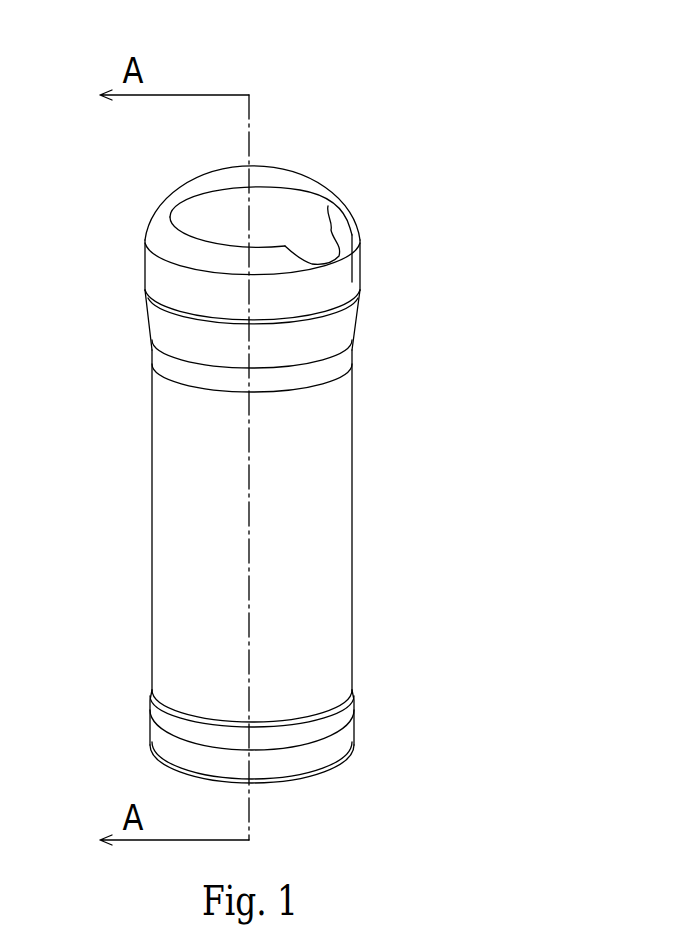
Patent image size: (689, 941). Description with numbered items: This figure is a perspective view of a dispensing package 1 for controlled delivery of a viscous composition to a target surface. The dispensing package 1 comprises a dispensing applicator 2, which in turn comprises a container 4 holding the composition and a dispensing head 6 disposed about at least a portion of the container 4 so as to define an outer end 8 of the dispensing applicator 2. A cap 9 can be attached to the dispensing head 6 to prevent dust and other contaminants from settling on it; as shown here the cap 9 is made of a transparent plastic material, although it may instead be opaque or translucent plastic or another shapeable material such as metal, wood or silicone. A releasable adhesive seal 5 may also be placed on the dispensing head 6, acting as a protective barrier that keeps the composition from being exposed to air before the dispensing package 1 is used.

The dispensing package 1 is at (286, 116).
The dispensing applicator 2 is at (473, 158).
The container 4 is at (353, 397).
The releasable adhesive seal 5 is at (272, 217).
The dispensing head 6 is at (340, 235).
The outer end 8 is at (360, 232).
The cap 9 is at (147, 255).